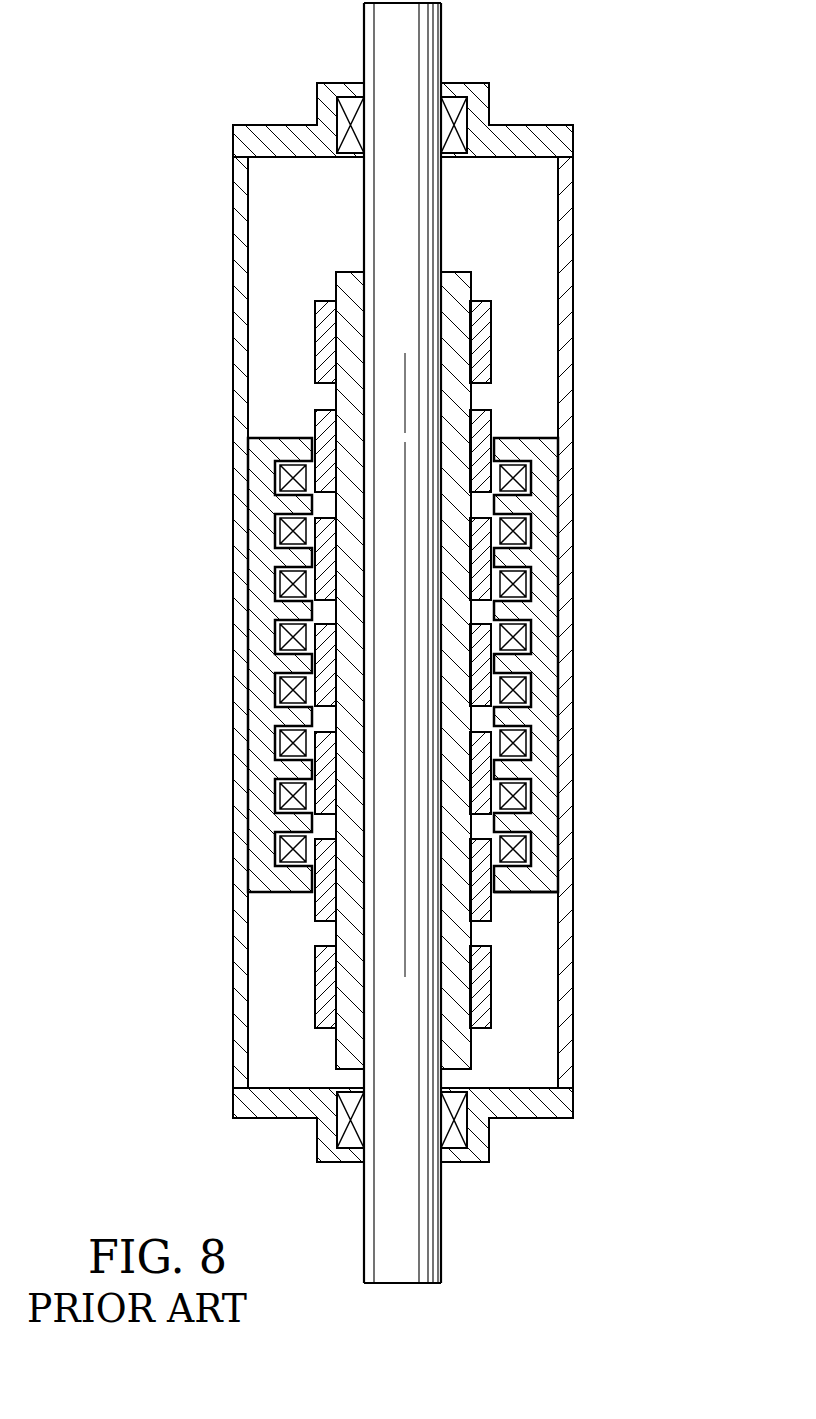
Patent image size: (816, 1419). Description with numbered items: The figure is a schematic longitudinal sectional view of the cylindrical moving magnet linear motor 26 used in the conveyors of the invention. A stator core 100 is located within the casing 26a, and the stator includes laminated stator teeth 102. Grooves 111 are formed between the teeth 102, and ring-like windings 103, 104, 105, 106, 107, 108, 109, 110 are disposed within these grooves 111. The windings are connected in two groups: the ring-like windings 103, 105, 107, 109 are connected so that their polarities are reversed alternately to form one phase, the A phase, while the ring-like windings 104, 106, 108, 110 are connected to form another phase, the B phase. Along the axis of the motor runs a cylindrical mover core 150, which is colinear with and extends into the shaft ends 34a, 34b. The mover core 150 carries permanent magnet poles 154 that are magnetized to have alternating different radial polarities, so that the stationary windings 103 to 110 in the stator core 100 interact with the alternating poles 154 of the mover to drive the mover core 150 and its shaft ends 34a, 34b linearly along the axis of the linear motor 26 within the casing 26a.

The linear motor 26 is at (446, 643).
The casing 26a is at (573, 247).
The shaft end 34a is at (442, 1224).
The shaft end 34b is at (441, 44).
The stator core 100 is at (265, 670).
The laminated stator teeth 102 is at (336, 670).
The ring-like winding 103 is at (527, 847).
The ring-like winding 104 is at (527, 794).
The ring-like winding 105 is at (527, 740).
The ring-like winding 106 is at (527, 687).
The ring-like winding 107 is at (527, 633).
The ring-like winding 108 is at (527, 579).
The ring-like winding 109 is at (527, 525).
The ring-like winding 110 is at (527, 470).
The grooves 111 is at (560, 888).
The mover core 150 is at (364, 200).
The permanent magnet poles 154 is at (322, 1017).